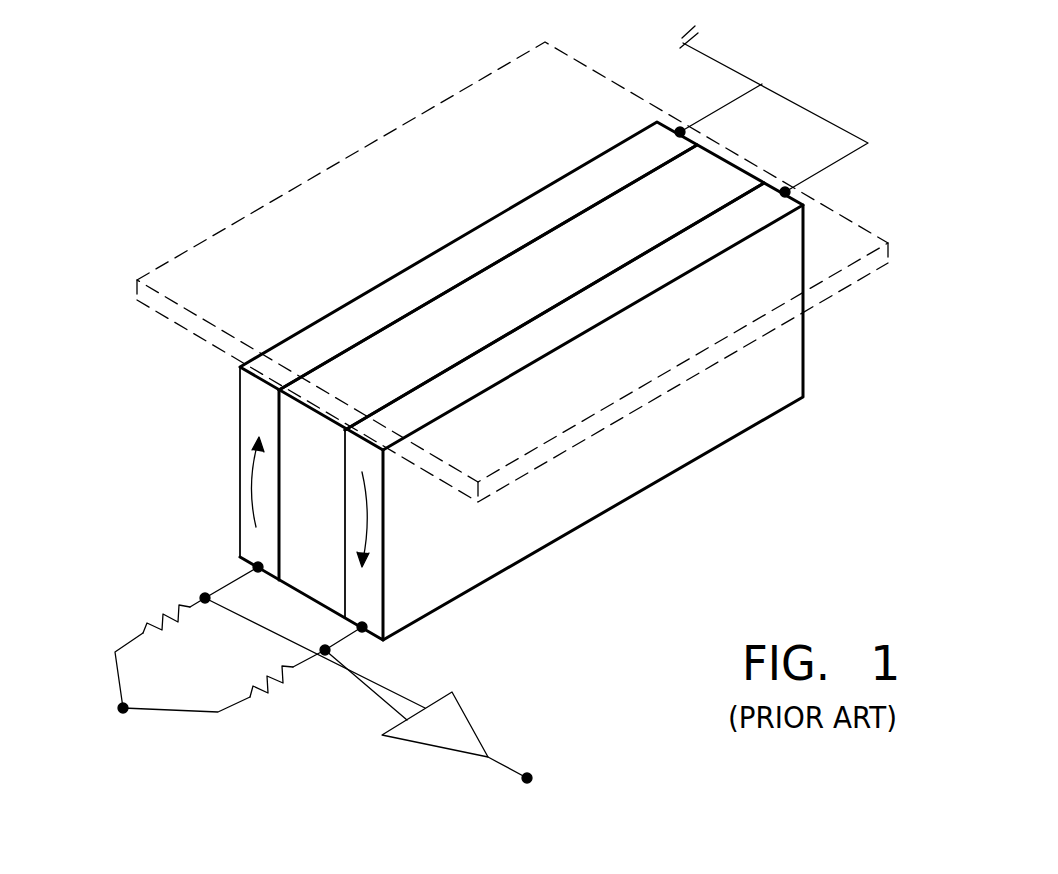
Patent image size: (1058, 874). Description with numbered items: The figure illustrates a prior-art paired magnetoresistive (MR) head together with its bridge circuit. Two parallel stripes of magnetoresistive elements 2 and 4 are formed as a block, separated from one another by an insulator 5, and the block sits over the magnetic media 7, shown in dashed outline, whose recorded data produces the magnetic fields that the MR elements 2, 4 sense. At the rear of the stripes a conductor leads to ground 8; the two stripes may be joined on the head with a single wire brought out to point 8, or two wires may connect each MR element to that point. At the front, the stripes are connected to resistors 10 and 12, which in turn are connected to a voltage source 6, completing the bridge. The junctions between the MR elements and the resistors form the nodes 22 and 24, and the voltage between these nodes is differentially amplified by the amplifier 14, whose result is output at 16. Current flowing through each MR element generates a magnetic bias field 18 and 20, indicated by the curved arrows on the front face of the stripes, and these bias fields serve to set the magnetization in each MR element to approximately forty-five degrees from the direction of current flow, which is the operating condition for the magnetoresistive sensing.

The magnetoresistive element 2 is at (611, 493).
The magnetoresistive element 4 is at (538, 205).
The insulator 5 is at (383, 350).
The voltage source 6 is at (125, 712).
The magnetic media 7 is at (830, 297).
The ground 8 is at (683, 38).
The resistor 10 is at (143, 628).
The resistor 12 is at (257, 700).
The amplifier 14 is at (475, 718).
The output 16 is at (530, 776).
The magnetic bias field 18 is at (384, 531).
The magnetic bias field 20 is at (247, 490).
The voltage node 22 is at (322, 648).
The voltage node 24 is at (204, 594).